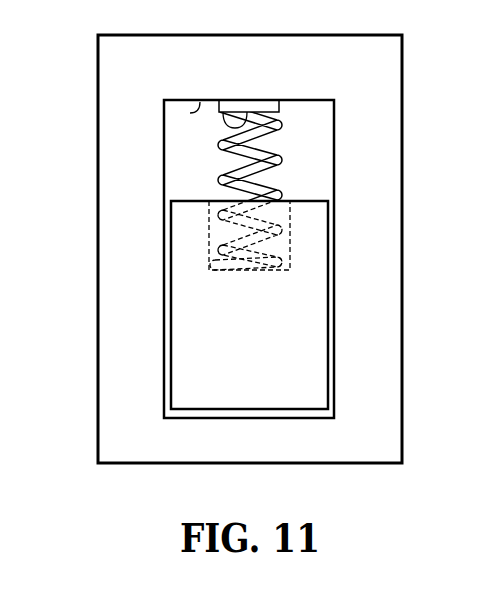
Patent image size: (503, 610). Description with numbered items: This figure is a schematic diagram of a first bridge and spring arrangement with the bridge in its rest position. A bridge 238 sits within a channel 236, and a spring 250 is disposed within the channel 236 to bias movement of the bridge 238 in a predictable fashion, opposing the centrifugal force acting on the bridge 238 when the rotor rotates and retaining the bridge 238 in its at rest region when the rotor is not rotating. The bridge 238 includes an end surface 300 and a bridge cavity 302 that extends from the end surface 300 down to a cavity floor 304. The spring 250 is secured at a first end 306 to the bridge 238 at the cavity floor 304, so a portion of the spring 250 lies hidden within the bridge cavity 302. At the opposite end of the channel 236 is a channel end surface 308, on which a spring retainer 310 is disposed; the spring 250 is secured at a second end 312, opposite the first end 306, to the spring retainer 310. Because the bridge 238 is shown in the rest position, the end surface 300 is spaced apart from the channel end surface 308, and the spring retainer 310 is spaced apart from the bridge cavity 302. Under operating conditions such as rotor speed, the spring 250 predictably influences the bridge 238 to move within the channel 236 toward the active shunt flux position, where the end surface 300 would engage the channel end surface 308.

The channel 236 is at (332, 320).
The bridge 238 is at (330, 388).
The spring 250 is at (272, 162).
The end surface 300 is at (192, 200).
The bridge cavity 302 is at (207, 222).
The cavity floor 304 is at (205, 265).
The first end 306 is at (290, 262).
The channel end surface 308 is at (190, 113).
The spring retainer 310 is at (280, 104).
The second end 312 is at (238, 135).